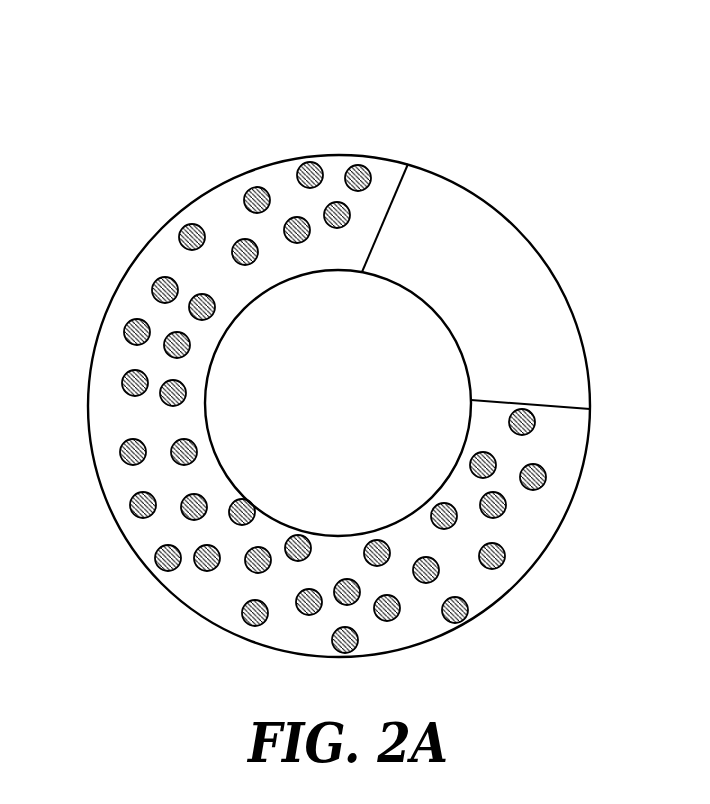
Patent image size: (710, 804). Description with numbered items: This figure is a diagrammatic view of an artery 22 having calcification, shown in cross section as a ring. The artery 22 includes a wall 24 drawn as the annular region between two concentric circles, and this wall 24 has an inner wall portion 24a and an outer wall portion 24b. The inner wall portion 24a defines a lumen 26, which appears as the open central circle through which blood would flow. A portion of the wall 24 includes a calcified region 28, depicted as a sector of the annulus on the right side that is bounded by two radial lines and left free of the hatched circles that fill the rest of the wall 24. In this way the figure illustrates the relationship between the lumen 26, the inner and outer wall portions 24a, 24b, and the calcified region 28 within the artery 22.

The artery 22 is at (518, 167).
The wall 24 is at (183, 228).
The inner wall portion 24a is at (318, 268).
The outer wall portion 24b is at (220, 178).
The lumen 26 is at (352, 465).
The calcified region 28 is at (500, 290).